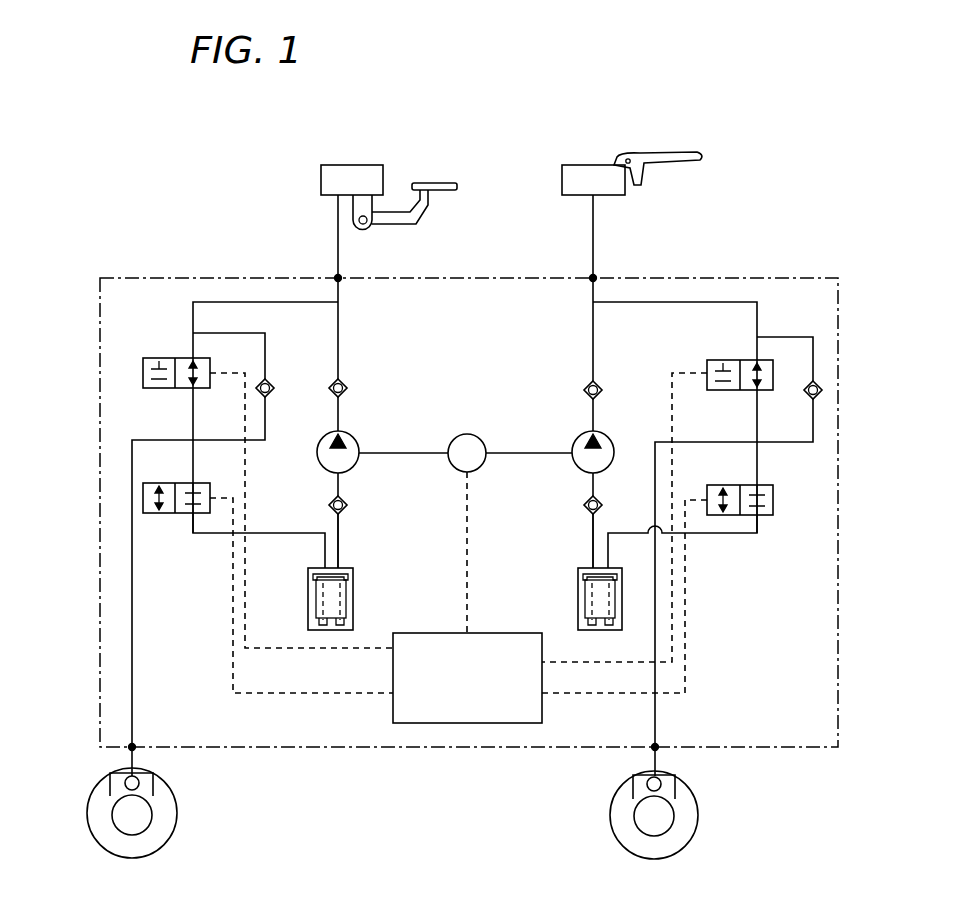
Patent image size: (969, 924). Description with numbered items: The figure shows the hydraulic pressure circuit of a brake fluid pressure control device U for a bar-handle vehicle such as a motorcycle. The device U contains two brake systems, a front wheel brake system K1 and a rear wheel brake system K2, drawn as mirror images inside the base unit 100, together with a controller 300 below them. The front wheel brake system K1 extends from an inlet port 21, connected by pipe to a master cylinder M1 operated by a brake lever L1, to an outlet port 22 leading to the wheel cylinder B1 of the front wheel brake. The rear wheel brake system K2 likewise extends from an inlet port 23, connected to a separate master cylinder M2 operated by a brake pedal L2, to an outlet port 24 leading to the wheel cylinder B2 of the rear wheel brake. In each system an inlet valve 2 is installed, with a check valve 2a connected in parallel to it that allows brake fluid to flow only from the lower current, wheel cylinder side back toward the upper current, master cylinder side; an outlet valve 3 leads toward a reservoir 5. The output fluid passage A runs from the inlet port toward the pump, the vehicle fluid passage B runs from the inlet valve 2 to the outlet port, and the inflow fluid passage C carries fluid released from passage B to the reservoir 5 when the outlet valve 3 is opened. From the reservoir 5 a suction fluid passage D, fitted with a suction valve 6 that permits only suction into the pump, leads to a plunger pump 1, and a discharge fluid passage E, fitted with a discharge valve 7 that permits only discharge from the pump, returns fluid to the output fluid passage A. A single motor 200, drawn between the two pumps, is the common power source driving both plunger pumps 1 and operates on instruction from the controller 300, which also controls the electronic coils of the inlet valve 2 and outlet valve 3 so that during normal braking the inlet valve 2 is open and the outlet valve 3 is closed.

The plunger pump 1 is at (352, 436).
The inlet valve 2 is at (148, 358).
The check valve 2a is at (272, 385).
The outlet valve 3 is at (210, 488).
The reservoir 5 is at (356, 588).
The suction valve 6 is at (347, 500).
The discharge valve 7 is at (344, 383).
The inlet port 21 is at (590, 282).
The outlet port 22 is at (652, 750).
The inlet port 23 is at (341, 281).
The outlet port 24 is at (135, 750).
The base unit 100 is at (818, 278).
The motor 200 is at (477, 428).
The controller 300 is at (458, 548).
The output fluid passage A is at (206, 302).
The vehicle fluid passage B is at (133, 636).
The wheel cylinder B1 is at (670, 776).
The wheel cylinder B2 is at (118, 774).
The inflow fluid passage C is at (208, 535).
The suction fluid passage D is at (341, 548).
The discharge fluid passage E is at (340, 338).
The front wheel brake system K1 is at (765, 294).
The rear wheel brake system K2 is at (178, 306).
The brake lever L1 is at (667, 165).
The brake pedal L2 is at (443, 228).
The master cylinder M1 is at (603, 197).
The master cylinder M2 is at (321, 180).
The brake fluid pressure control device U is at (500, 128).